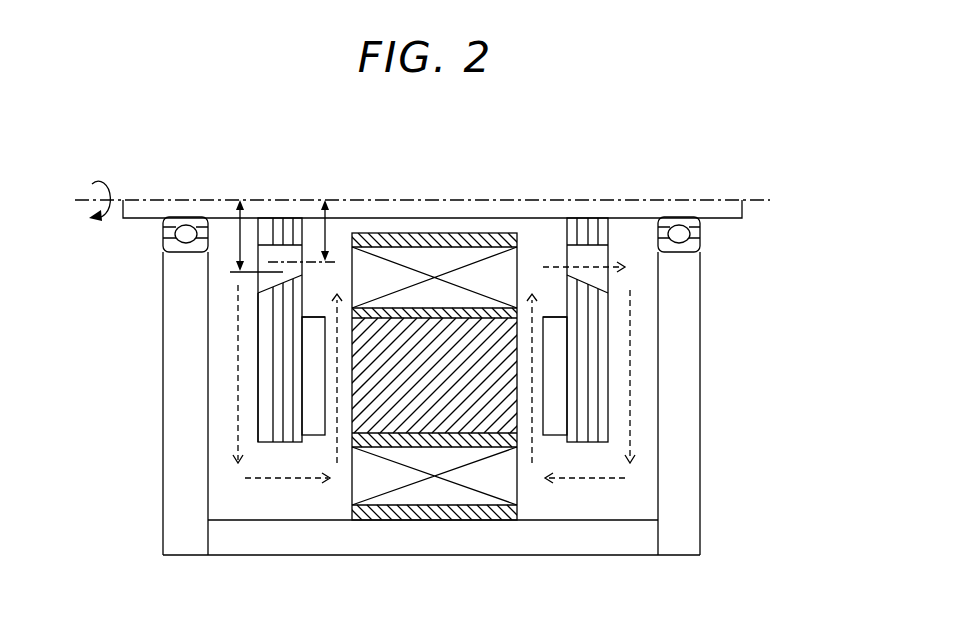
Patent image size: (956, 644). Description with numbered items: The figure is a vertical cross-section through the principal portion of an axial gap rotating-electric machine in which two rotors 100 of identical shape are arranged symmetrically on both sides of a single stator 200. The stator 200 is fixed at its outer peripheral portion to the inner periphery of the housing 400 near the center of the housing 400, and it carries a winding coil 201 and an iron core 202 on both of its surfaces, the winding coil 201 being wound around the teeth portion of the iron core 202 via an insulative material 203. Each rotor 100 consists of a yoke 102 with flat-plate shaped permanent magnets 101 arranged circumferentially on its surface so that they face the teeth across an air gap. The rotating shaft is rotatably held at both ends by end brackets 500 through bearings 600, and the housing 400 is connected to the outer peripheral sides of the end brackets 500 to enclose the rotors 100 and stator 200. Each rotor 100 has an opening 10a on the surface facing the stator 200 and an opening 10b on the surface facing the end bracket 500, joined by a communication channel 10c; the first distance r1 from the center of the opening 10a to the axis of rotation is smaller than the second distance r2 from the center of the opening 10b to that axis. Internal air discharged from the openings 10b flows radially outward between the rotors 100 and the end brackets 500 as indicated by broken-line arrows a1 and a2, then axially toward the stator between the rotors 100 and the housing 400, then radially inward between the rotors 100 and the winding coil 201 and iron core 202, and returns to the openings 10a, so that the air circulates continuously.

The opening 10a is at (303, 272).
The opening 10b is at (259, 262).
The communication channel 10c is at (273, 280).
The first distance r1 is at (325, 193).
The second distance r2 is at (240, 193).
The rotor 100 is at (274, 450).
The permanent magnet 101 is at (315, 428).
The yoke 102 is at (272, 377).
The stator 200 is at (378, 523).
The winding coil 201 is at (437, 257).
The iron core 202 is at (480, 413).
The insulative material 203 is at (500, 512).
The housing 400 is at (637, 560).
The end bracket 500 is at (160, 345).
The bearing 600 is at (158, 248).
The broken-line arrow a1 is at (238, 423).
The broken-line arrow a2 is at (630, 390).